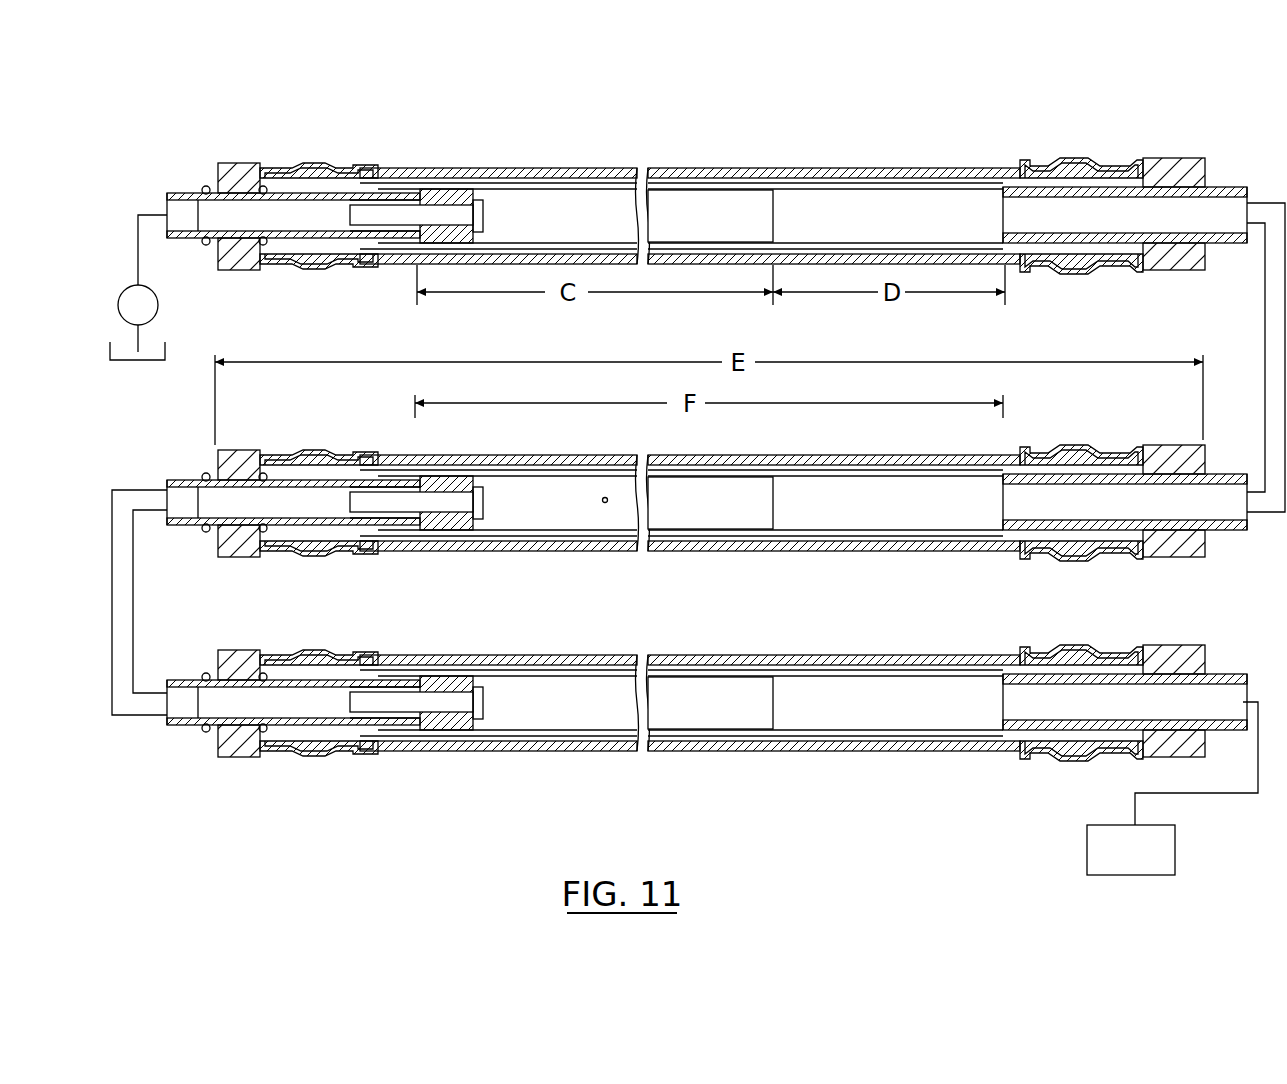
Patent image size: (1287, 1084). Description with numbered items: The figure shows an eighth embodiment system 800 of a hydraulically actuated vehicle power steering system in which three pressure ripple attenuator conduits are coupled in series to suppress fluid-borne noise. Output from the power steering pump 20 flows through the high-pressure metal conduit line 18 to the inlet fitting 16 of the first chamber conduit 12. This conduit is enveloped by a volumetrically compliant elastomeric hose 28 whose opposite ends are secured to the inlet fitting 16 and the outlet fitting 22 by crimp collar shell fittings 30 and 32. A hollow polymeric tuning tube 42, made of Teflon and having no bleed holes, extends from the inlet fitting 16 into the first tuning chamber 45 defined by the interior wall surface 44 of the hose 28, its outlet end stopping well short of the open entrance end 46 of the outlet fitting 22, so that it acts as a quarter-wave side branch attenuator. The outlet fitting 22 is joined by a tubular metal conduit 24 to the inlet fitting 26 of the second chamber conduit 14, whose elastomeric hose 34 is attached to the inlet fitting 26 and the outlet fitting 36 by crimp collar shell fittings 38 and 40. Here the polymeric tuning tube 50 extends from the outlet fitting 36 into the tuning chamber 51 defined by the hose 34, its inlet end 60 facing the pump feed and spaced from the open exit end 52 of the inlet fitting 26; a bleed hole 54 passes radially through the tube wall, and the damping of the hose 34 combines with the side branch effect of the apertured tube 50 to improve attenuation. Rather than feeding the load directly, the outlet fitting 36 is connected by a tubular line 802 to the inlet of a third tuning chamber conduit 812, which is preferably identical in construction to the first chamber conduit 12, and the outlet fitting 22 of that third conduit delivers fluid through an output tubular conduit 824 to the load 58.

The eighth embodiment system 800 is at (218, 138).
The first chamber conduit 12 is at (213, 175).
The second chamber conduit 14 is at (207, 463).
The third tuning chamber conduit 812 is at (210, 663).
The inlet fitting 16 is at (192, 247).
The outlet fitting 36 is at (182, 533).
The high-pressure metal conduit line 18 is at (135, 243).
The power steering pump 20 is at (160, 306).
The crimp collar shell fitting 30 is at (320, 160).
The crimp collar shell fitting 40 is at (322, 447).
The tuning tube 42 is at (617, 188).
The tuning tube 50 is at (612, 475).
The elastomeric hose 28 is at (780, 167).
The elastomeric hose 34 is at (802, 450).
The interior wall surface 44 is at (848, 186).
The tuning chamber 51 is at (862, 490).
The first tuning chamber 45 is at (880, 192).
The inlet end 60 is at (778, 498).
The bleed opening 54 is at (600, 500).
The open entrance end 46 is at (1000, 207).
The open exit end 52 is at (1000, 505).
The crimp collar shell fitting 32 is at (1087, 158).
The crimp collar shell fitting 38 is at (1085, 447).
The outlet fitting 22 is at (1222, 180).
The inlet fitting 26 is at (1222, 530).
The tubular metal conduit 24 is at (1265, 200).
The tubular line 802 is at (120, 618).
The output tubular conduit 824 is at (1238, 795).
The load 58 is at (1087, 838).